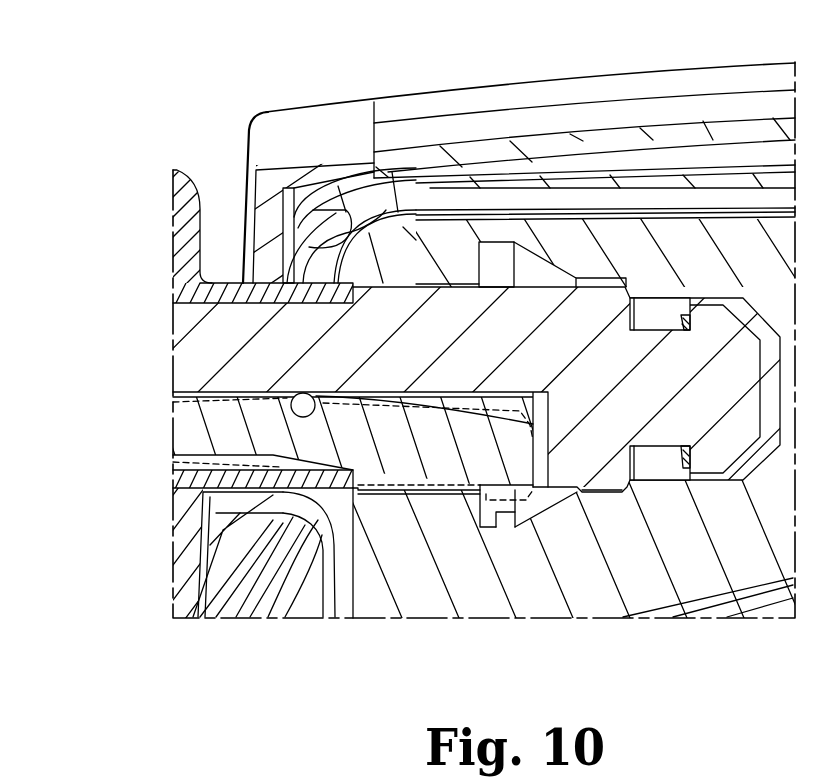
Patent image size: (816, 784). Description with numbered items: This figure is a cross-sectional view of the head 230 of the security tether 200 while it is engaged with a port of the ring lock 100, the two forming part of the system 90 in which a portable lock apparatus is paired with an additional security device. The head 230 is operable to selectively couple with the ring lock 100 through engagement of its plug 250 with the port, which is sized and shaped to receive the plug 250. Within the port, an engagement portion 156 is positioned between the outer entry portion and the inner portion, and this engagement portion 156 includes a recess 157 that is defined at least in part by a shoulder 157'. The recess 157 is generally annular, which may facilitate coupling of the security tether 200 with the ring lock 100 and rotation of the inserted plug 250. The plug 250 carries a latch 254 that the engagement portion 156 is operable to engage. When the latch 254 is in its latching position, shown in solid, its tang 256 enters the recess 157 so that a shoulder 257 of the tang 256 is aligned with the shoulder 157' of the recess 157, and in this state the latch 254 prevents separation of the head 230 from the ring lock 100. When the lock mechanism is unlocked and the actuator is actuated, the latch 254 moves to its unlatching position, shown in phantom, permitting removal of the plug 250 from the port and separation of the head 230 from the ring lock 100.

The system 90 is at (92, 38).
The ring lock 100 is at (425, 66).
The security tether 200 is at (196, 131).
The head 230 is at (209, 158).
The engagement portion 156 is at (570, 229).
The recess 157 is at (516, 158).
The shoulder 157' is at (477, 525).
The plug 250 is at (659, 300).
The latch 254 is at (325, 411).
The tang 256 is at (499, 527).
The shoulder 257 is at (494, 513).